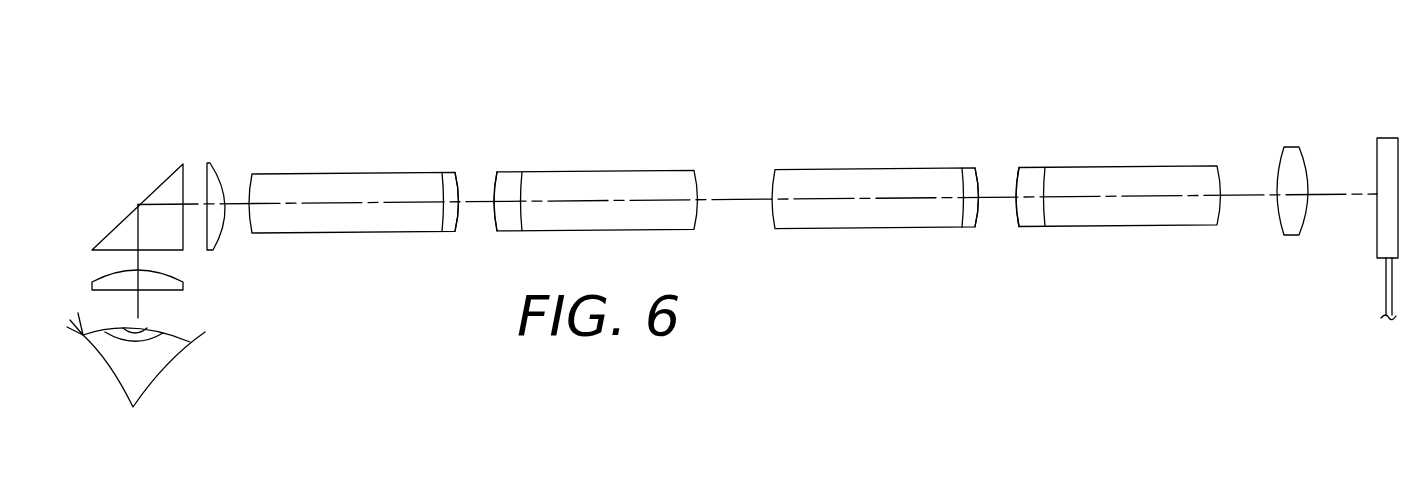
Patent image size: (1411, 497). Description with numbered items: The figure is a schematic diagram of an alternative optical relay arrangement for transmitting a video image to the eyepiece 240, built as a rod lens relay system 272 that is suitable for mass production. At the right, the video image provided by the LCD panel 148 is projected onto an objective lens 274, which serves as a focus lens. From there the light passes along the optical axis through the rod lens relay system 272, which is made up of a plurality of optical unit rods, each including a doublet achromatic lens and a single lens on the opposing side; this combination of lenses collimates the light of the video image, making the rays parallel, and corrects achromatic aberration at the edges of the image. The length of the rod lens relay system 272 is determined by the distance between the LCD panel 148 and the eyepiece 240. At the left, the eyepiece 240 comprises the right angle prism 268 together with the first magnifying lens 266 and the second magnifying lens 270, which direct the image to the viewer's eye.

The eyepiece 240 is at (107, 194).
The right angle prism 268 is at (168, 173).
The first magnifying lens 266 is at (218, 170).
The second magnifying lens 270 is at (183, 282).
The rod lens relay system 272 is at (887, 277).
The objective lens 274 is at (1290, 147).
The LCD panel 148 is at (1387, 138).